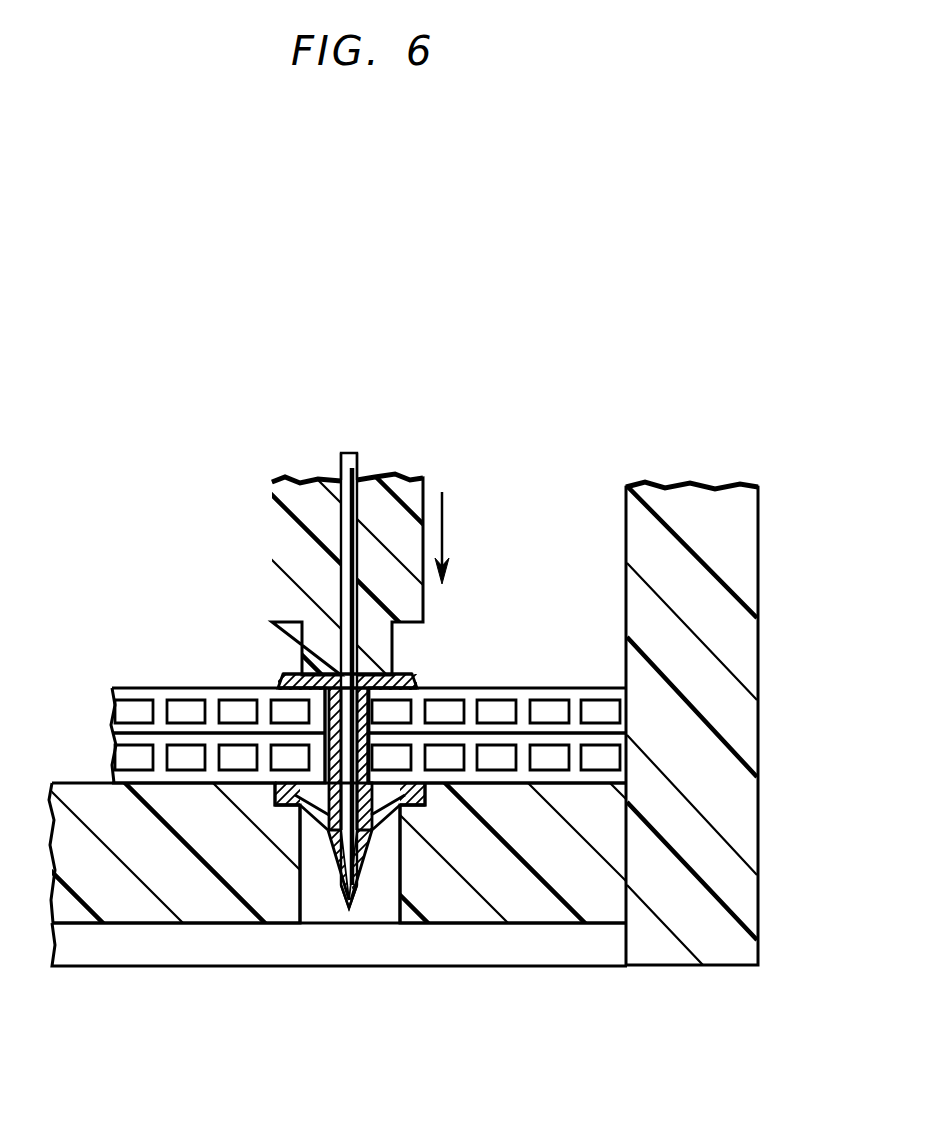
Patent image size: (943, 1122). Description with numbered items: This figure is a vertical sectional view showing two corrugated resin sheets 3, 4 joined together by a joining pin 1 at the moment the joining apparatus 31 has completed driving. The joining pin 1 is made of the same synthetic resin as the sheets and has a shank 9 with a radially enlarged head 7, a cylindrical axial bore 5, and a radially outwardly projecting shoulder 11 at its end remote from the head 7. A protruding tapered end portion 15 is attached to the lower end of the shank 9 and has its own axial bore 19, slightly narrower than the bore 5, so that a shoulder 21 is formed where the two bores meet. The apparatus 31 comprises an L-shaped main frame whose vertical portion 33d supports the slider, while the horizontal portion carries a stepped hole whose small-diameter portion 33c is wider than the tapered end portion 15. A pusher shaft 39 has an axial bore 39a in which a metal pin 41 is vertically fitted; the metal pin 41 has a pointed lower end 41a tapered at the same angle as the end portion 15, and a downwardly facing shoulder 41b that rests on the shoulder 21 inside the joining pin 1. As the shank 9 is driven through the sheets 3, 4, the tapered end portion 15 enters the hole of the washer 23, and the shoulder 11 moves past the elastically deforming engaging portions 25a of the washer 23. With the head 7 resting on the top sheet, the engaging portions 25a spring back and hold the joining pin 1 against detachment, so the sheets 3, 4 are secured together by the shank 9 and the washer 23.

The joining pin 1 is at (415, 688).
The corrugated sheet 3 is at (562, 700).
The corrugated sheet 4 is at (606, 745).
The cylindrical axial bore 5 is at (360, 668).
The head 7 is at (287, 675).
The shank 9 is at (328, 727).
The shoulder 11 is at (408, 810).
The protruding tapered end portion 15 is at (338, 866).
The cylindrical axial bore 19 is at (346, 878).
The shoulder 21 is at (336, 848).
The washer 23 is at (405, 822).
The engaging portions 25a is at (303, 812).
The apparatus 31 is at (528, 527).
The small-diameter portion 33c is at (388, 947).
The vertical portion 33d is at (730, 565).
The pusher shaft 39 is at (282, 522).
The axial bore 39a is at (358, 462).
The metal pin 41 is at (338, 461).
The pointed lower end 41a is at (349, 908).
The shoulder 41b is at (373, 807).